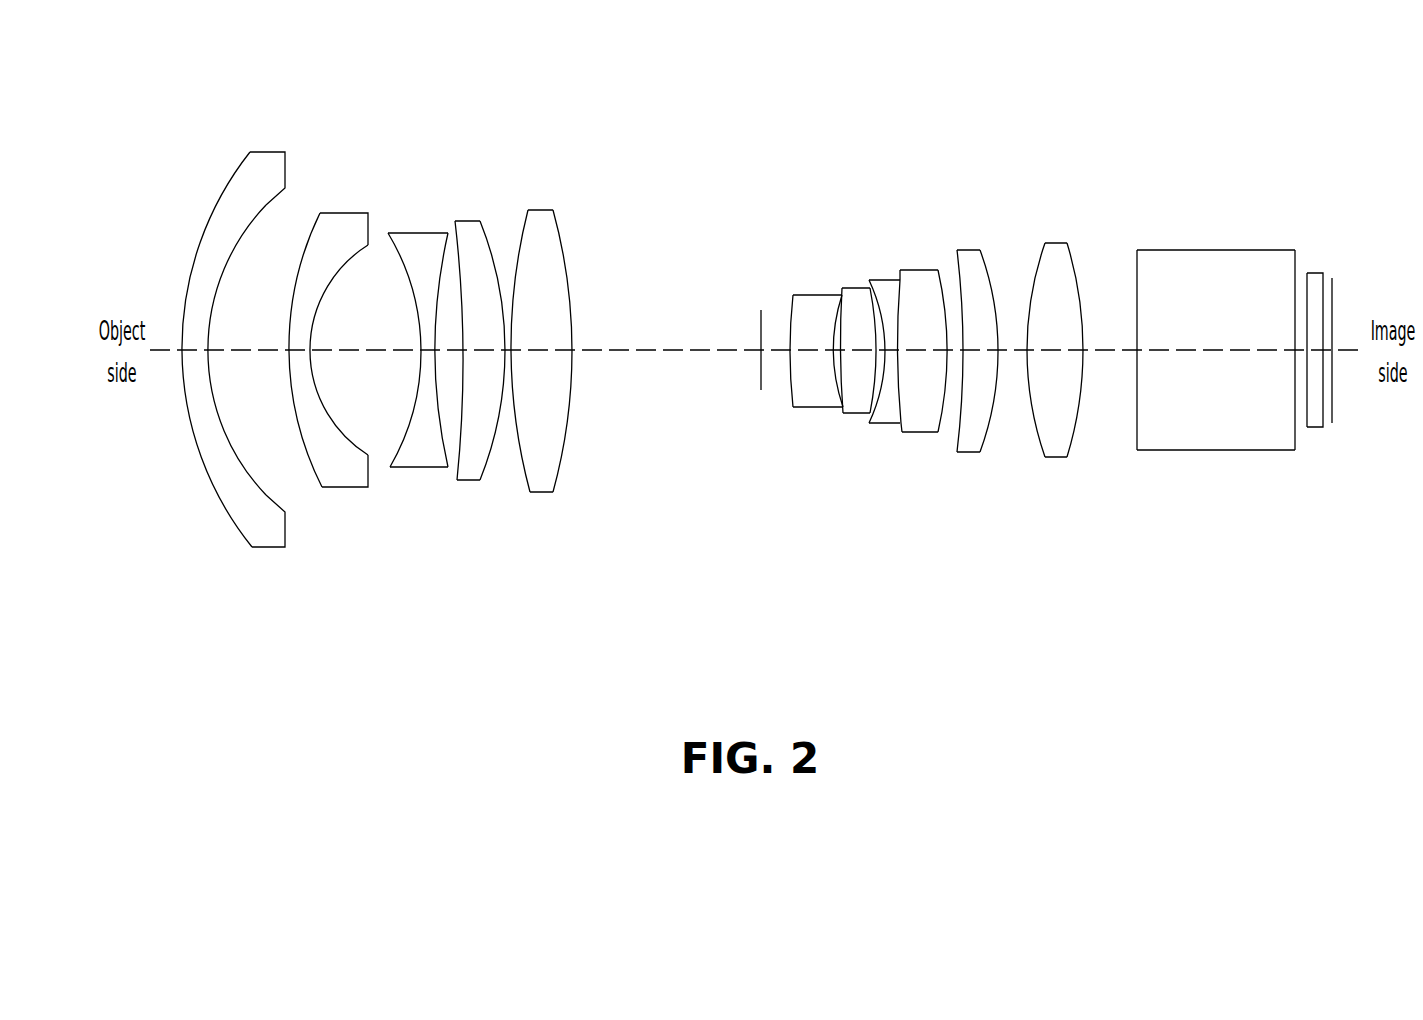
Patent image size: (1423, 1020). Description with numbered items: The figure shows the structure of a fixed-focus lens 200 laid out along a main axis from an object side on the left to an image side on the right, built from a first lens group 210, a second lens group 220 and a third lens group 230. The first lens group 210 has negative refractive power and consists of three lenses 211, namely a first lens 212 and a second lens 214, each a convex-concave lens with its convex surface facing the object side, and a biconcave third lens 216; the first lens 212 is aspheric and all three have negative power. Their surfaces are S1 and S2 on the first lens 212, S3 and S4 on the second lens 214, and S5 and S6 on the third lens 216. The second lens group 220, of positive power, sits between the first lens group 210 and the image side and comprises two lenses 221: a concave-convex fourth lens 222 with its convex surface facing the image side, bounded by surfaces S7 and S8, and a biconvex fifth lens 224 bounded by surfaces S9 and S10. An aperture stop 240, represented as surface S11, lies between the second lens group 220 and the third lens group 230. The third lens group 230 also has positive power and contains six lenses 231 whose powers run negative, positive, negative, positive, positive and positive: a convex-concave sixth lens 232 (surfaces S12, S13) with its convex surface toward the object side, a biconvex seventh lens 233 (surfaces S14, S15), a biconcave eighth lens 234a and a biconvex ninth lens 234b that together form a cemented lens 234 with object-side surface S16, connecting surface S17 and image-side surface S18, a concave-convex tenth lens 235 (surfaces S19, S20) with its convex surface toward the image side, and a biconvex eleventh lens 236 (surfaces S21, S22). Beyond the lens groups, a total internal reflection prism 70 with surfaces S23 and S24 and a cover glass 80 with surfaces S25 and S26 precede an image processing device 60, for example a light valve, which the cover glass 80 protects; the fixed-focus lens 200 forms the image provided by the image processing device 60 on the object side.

The fixed-focus lens 200 is at (1262, 657).
The first lens group 210 is at (88, 617).
The lenses 211 is at (266, 353).
The first lens 212 is at (242, 510).
The second lens 214 is at (337, 477).
The third lens 216 is at (420, 453).
The second lens group 220 is at (418, 617).
The lenses 221 is at (518, 379).
The fourth lens 222 is at (472, 463).
The fifth lens 224 is at (543, 470).
The third lens group 230 is at (1260, 621).
The lenses 231 is at (974, 387).
The sixth lens 232 is at (815, 395).
The seventh lens 233 is at (858, 402).
The cemented lens 234 is at (860, 560).
The eighth lens 234a is at (887, 410).
The ninth lens 234b is at (920, 420).
The tenth lens 235 is at (975, 433).
The eleventh lens 236 is at (1058, 438).
The aperture stop 240 is at (762, 375).
The total internal reflection (TIR) prism 70 is at (1230, 432).
The cover glass 80 is at (1316, 420).
The image processing device 60 is at (1333, 395).
The surface S1 is at (228, 185).
The surface S2 is at (267, 203).
The surface S3 is at (312, 235).
The surface S4 is at (340, 265).
The surface S5 is at (398, 258).
The surface S6 is at (440, 268).
The surface S7 is at (458, 250).
The surface S8 is at (488, 250).
The surface S9 is at (522, 243).
The surface S10 is at (560, 238).
The surface S11 is at (758, 330).
The surface S12 is at (790, 320).
The surface S13 is at (833, 335).
The surface S14 is at (848, 335).
The surface S15 is at (870, 322).
The surface S16 is at (885, 310).
The surface S17 is at (905, 305).
The surface S18 is at (938, 292).
The surface S19 is at (962, 287).
The surface S20 is at (995, 298).
The surface S21 is at (1040, 272).
The surface S22 is at (1078, 277).
The surface S23 is at (1140, 278).
The surface S24 is at (1292, 280).
The surface S25 is at (1306, 290).
The surface S26 is at (1325, 298).